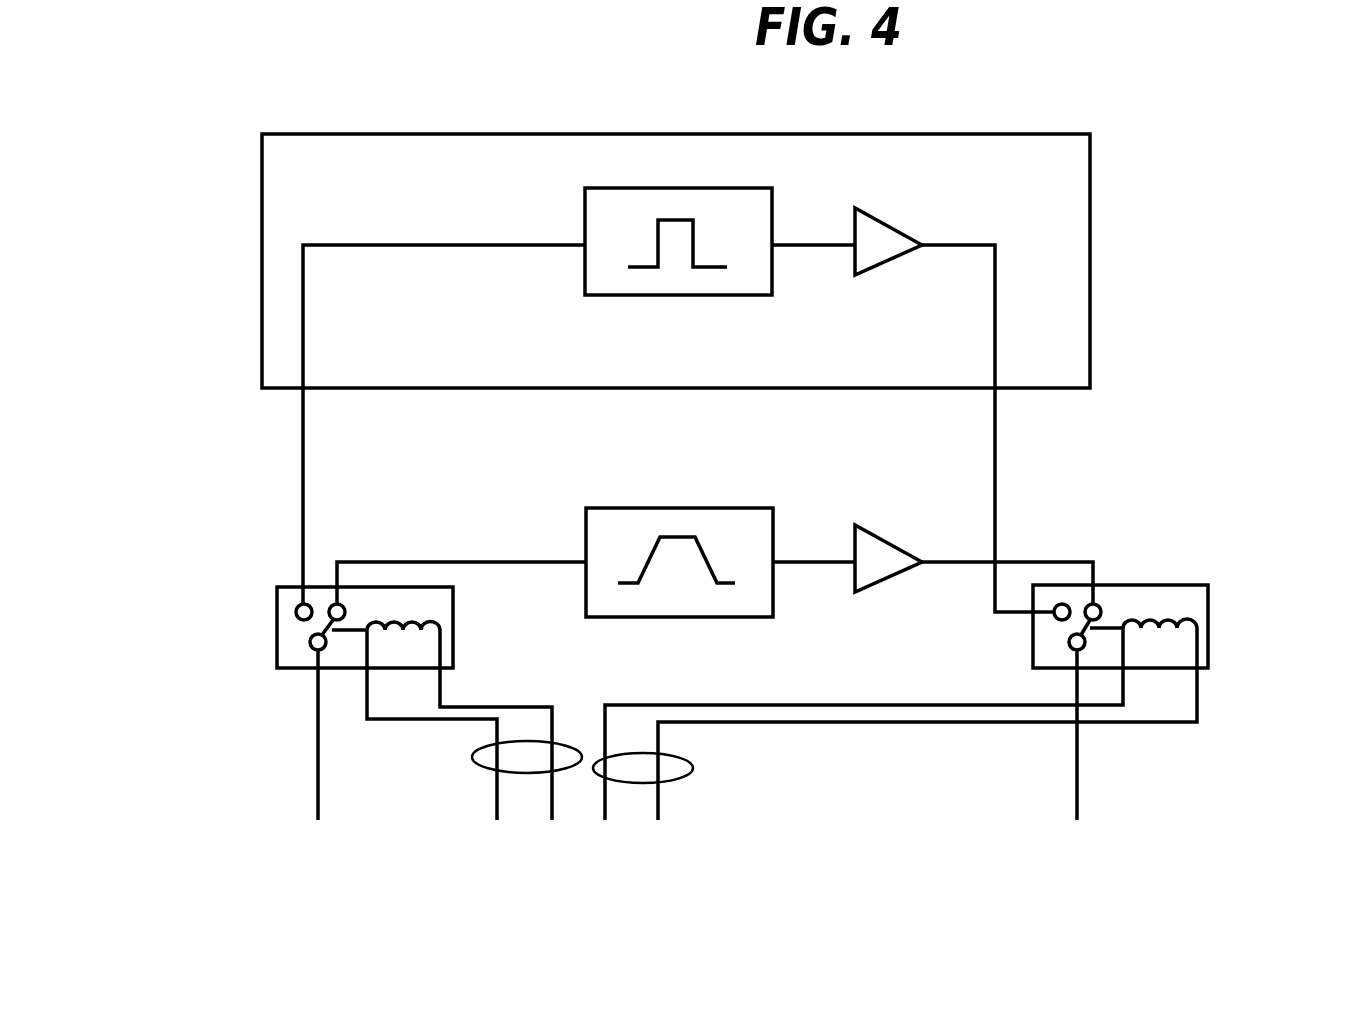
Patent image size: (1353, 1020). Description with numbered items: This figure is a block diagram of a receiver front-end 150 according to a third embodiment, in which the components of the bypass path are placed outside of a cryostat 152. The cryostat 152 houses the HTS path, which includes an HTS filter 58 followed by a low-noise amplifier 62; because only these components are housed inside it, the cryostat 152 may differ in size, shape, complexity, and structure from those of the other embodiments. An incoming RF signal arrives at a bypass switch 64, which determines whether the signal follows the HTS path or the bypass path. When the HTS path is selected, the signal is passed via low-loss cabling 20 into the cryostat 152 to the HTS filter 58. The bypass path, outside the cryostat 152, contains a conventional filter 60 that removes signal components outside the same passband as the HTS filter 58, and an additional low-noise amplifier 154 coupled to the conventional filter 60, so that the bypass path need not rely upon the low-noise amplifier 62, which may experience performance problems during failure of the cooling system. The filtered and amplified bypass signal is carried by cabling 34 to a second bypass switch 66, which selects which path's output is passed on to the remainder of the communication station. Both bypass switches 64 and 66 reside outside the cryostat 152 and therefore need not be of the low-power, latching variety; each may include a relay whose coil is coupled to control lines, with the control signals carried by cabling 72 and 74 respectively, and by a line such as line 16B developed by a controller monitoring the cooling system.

The receiver front-end 150 is at (1180, 387).
The cryostat 152 is at (1090, 210).
The HTS filter 58 is at (691, 188).
The low-noise amplifier 62 is at (888, 226).
The low-loss cabling 20 is at (303, 506).
The conventional filter 60 is at (745, 508).
The additional low-noise amplifier 154 is at (888, 540).
The cabling 34 is at (1093, 567).
The bypass switch 64 is at (277, 613).
The bypass switch 66 is at (1208, 600).
The line 16B is at (512, 707).
The cabling 72 is at (500, 748).
The cabling 74 is at (680, 775).